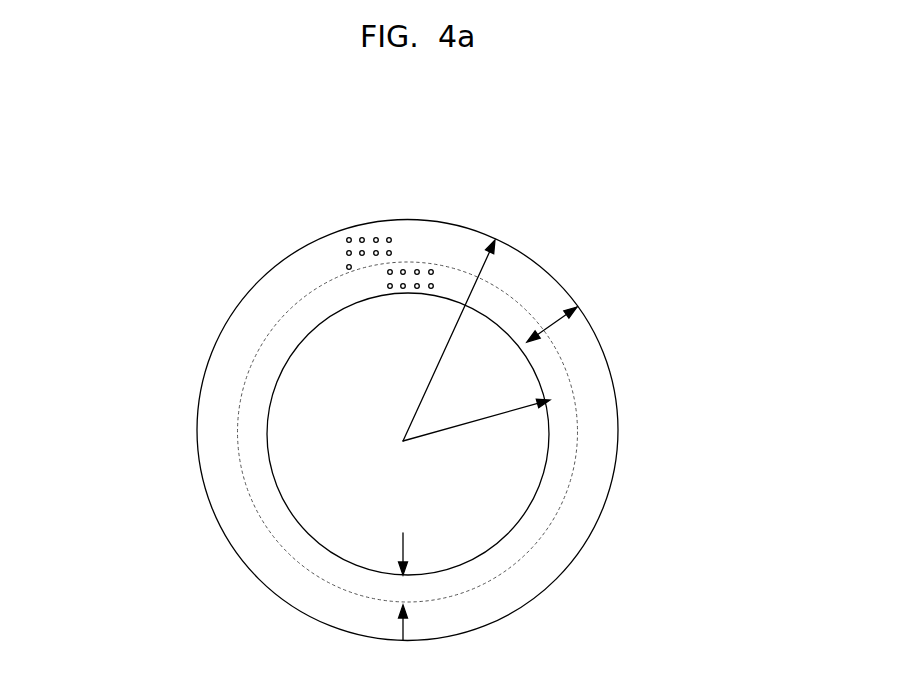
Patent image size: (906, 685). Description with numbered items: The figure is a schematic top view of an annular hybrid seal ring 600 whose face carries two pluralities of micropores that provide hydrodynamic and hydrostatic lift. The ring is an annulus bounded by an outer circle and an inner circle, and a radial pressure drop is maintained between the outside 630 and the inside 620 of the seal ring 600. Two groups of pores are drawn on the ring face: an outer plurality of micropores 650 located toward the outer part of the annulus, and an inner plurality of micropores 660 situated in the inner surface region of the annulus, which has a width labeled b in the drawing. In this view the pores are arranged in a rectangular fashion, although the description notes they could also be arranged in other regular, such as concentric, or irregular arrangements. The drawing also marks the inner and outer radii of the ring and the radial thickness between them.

The hybrid seal ring 600 is at (615, 440).
The inside of the seal ring 620 is at (258, 431).
The outside of the seal ring 630 is at (216, 536).
The outer plurality of micropores 650 is at (338, 256).
The inner plurality of micropores 660 is at (367, 287).